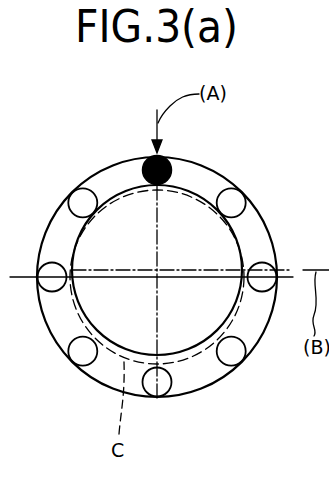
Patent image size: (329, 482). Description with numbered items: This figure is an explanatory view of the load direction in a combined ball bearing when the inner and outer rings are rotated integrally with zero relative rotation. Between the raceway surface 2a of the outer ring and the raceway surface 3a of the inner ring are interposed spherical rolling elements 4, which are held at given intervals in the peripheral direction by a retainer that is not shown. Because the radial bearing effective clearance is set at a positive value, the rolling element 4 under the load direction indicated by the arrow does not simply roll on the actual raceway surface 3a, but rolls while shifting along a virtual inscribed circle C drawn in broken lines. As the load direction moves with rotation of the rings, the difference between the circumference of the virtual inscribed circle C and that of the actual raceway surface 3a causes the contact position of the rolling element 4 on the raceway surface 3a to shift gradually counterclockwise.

The raceway surface of the outer ring 2a is at (207, 383).
The raceway surface of the inner ring 3a is at (80, 322).
The rolling element 4 is at (170, 172).